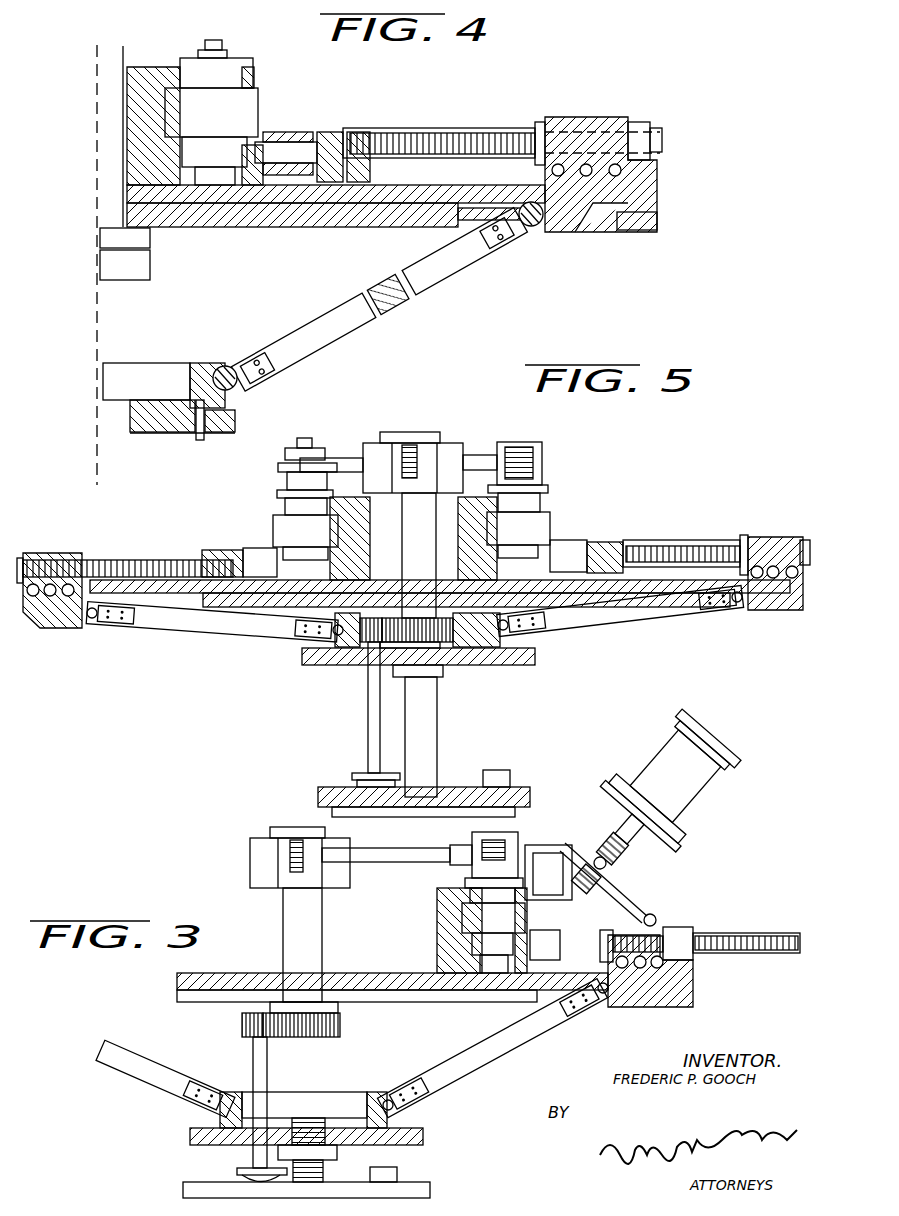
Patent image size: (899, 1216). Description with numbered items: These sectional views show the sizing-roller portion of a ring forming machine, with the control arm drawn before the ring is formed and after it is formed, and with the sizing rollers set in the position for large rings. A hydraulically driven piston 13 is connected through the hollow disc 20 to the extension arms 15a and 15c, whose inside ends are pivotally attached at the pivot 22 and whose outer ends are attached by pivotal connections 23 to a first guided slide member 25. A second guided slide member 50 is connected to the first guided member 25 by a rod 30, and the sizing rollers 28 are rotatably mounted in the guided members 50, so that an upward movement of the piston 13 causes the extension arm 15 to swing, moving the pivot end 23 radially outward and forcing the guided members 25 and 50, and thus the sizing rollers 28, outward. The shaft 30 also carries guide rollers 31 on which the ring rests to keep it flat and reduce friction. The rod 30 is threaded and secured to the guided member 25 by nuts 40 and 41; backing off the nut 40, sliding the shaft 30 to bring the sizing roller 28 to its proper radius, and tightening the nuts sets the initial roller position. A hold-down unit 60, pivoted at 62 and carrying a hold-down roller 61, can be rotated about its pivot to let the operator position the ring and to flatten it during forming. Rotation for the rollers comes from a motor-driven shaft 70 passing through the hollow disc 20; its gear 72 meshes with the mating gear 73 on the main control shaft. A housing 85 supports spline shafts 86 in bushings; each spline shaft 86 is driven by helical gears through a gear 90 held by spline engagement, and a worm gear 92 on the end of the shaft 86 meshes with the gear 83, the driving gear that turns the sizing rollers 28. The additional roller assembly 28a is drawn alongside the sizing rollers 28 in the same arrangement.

In FIG. 4, the piston 13 is at (108, 455).
In FIG. 5, the piston 13 is at (438, 730).
In FIG. 3, the piston 13 is at (325, 1170).
In FIG. 4, the extension arm 15 is at (378, 320).
In FIG. 5, the extension arm 15a is at (632, 620).
In FIG. 3, the extension arm 15a is at (500, 1052).
In FIG. 5, the extension arm 15c is at (188, 630).
In FIG. 3, the extension arm 15c is at (140, 1077).
In FIG. 4, the hollow disc 20 is at (181, 432).
In FIG. 5, the hollow disc 20 is at (462, 665).
In FIG. 4, the pivotal attachment 22 is at (226, 366).
In FIG. 5, the pivotal attachment 22 is at (525, 637).
In FIG. 3, the pivotal attachment 22 is at (395, 1095).
In FIG. 4, the pivotal connection 23 is at (536, 228).
In FIG. 5, the pivotal connection 23 is at (740, 603).
In FIG. 3, the pivotal connection 23 is at (606, 994).
In FIG. 4, the first guided slide member 25 is at (565, 117).
In FIG. 5, the first guided slide member 25 is at (766, 537).
In FIG. 3, the first guided slide member 25 is at (693, 982).
In FIG. 4, the sizing roller 28 is at (246, 101).
In FIG. 3, the sizing roller 28 is at (475, 917).
In FIG. 5, the drive unit 28a is at (273, 528).
In FIG. 4, the rod 30 is at (430, 128).
In FIG. 5, the rod 30 is at (652, 540).
In FIG. 3, the rod 30 is at (726, 933).
In FIG. 4, the guide roller 31 is at (278, 132).
In FIG. 5, the guide roller 31 is at (580, 540).
In FIG. 3, the guide roller 31 is at (540, 930).
In FIG. 4, the nut 40 is at (540, 122).
In FIG. 5, the nut 40 is at (745, 535).
In FIG. 3, the nut 40 is at (607, 930).
In FIG. 4, the nut 41 is at (640, 122).
In FIG. 5, the nut 41 is at (805, 540).
In FIG. 3, the nut 41 is at (678, 927).
In FIG. 4, the second guided slide member 50 is at (350, 132).
In FIG. 5, the second guided slide member 50 is at (605, 542).
In FIG. 3, the hold-down unit 60 is at (728, 745).
In FIG. 3, the hold-down roller 61 is at (562, 892).
In FIG. 3, the pivot 62 is at (650, 914).
In FIG. 5, the shaft 70 is at (368, 735).
In FIG. 3, the shaft 70 is at (267, 1078).
In FIG. 5, the gear 72 is at (372, 644).
In FIG. 3, the gear 72 is at (242, 1026).
In FIG. 5, the mating gear 73 is at (418, 644).
In FIG. 3, the mating gear 73 is at (310, 1030).
In FIG. 5, the gear 83 is at (277, 493).
In FIG. 5, the housing means 85 is at (455, 443).
In FIG. 3, the housing means 85 is at (352, 845).
In FIG. 5, the spline shaft 86 is at (335, 458).
In FIG. 3, the spline shaft 86 is at (256, 840).
In FIG. 5, the gear 90 is at (412, 445).
In FIG. 3, the gear 90 is at (290, 850).
In FIG. 5, the worm gear 92 is at (525, 452).
In FIG. 3, the worm gear 92 is at (505, 842).